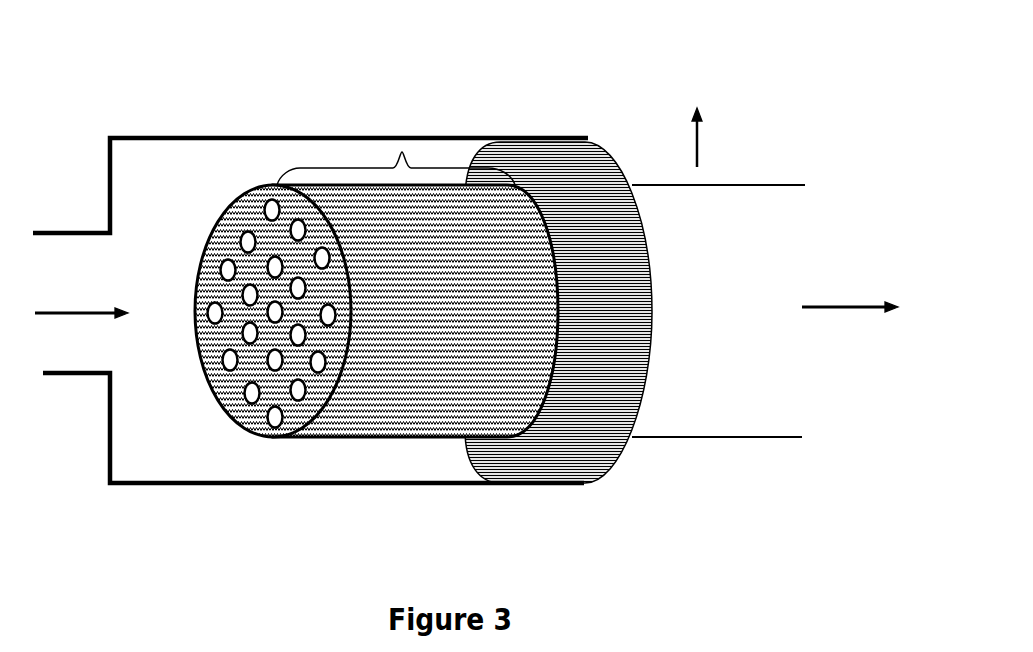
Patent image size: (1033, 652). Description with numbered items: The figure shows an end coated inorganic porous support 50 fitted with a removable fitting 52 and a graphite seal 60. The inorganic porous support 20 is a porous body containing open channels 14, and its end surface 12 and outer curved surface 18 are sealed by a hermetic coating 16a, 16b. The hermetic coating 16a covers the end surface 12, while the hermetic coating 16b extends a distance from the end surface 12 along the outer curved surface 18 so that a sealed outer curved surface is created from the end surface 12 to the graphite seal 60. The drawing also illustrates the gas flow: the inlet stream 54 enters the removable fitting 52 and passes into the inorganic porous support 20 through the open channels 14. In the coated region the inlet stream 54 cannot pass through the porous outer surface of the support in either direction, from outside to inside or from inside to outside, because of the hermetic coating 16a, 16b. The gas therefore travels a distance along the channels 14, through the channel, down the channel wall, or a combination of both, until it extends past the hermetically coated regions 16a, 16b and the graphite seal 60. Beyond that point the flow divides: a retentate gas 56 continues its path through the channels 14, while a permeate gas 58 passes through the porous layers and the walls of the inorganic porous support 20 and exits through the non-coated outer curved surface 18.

The end surface 12 is at (224, 401).
The open channels 14 is at (206, 326).
The hermetic coating 16a is at (232, 212).
The hermetic coating 16b is at (413, 146).
The outer curved surface 18 is at (721, 450).
The inorganic porous support 20 is at (752, 163).
The end coated inorganic porous support 50 is at (110, 82).
The removable fitting 52 is at (220, 502).
The inlet stream 54 is at (81, 288).
The retentate gas 56 is at (850, 286).
The permeate gas 58 is at (697, 117).
The graphite seal 60 is at (531, 465).